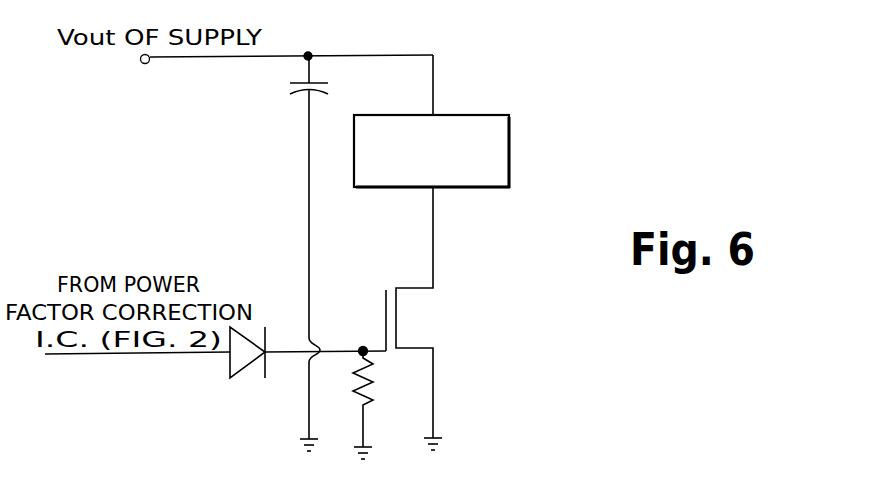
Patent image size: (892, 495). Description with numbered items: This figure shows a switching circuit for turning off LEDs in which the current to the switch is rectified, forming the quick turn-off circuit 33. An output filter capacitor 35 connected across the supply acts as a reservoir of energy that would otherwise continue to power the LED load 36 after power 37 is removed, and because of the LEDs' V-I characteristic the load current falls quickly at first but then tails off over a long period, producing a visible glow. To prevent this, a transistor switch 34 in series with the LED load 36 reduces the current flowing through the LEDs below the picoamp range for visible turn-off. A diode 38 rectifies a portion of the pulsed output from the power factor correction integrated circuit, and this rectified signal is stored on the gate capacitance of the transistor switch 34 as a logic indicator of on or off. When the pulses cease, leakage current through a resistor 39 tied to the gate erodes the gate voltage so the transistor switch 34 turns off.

The quick turn-off circuit 33 is at (450, 343).
The transistor switch 34 is at (396, 318).
The output filter capacitor 35 is at (293, 92).
The LED load 36 is at (487, 113).
The power 37 is at (139, 61).
The diode 38 is at (228, 360).
The resistor 39 is at (367, 398).